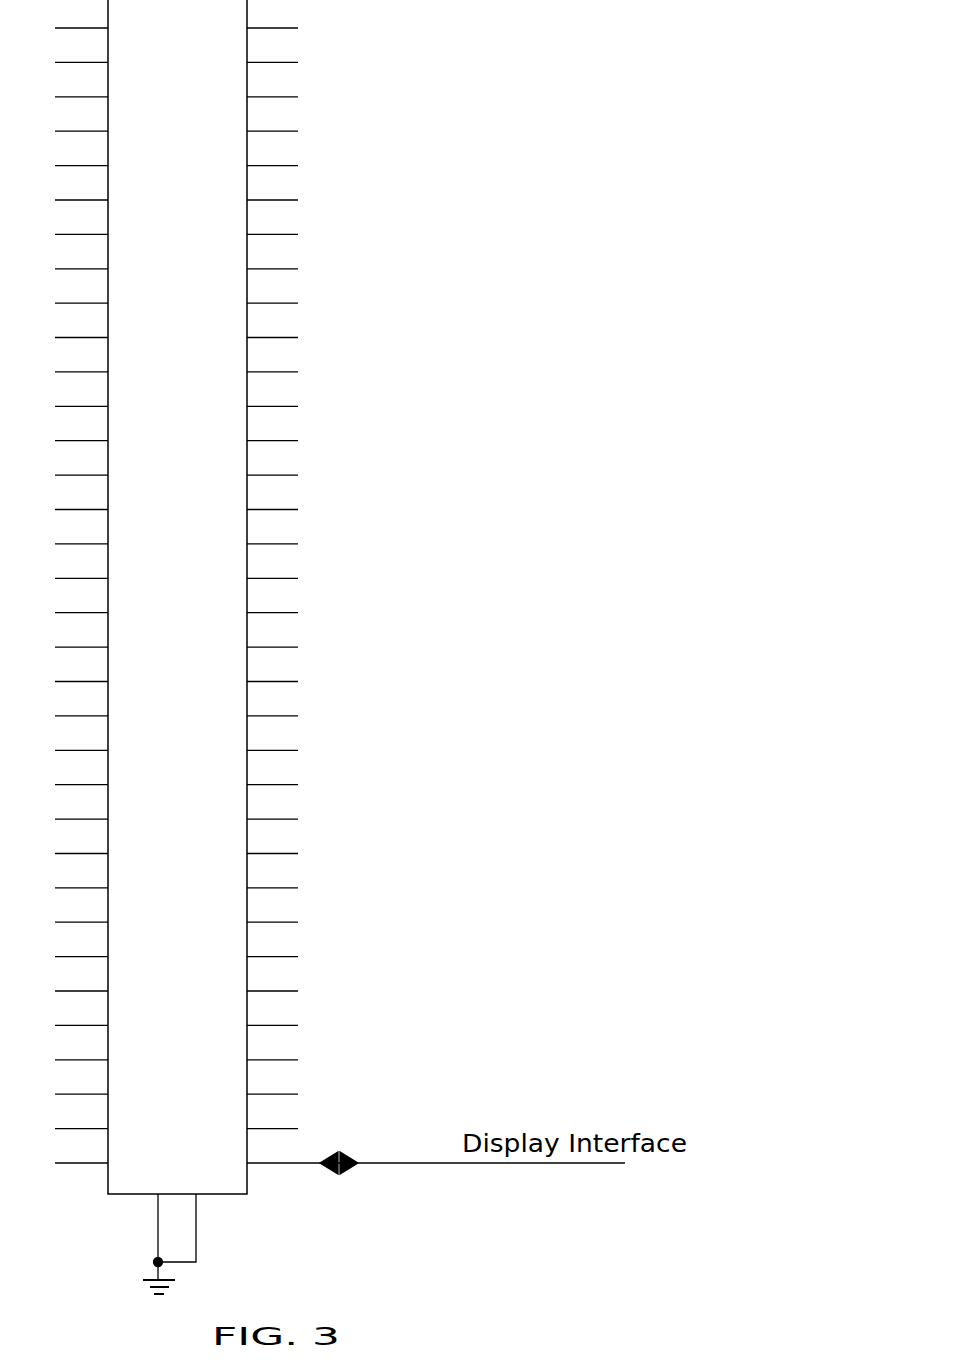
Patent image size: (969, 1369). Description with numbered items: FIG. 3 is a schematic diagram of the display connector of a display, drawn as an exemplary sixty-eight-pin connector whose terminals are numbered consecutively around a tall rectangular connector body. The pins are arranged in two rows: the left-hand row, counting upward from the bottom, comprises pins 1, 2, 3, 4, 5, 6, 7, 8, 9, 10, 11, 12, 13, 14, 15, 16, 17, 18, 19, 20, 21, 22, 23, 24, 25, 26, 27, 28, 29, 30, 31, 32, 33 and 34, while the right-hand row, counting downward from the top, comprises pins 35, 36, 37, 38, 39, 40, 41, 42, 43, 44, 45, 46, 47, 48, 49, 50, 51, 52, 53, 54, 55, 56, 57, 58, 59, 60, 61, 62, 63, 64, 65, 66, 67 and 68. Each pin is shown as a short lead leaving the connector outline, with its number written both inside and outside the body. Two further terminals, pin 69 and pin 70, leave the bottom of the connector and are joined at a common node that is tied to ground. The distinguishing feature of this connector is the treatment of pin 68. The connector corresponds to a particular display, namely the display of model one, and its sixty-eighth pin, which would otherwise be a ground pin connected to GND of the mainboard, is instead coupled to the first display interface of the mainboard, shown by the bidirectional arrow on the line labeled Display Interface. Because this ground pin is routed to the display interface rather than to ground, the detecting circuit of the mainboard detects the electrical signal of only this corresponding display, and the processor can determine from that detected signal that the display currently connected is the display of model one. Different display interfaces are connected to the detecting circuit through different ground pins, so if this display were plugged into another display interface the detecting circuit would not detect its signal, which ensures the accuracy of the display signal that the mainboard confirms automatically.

The pin 1 is at (92, 1158).
The pin 2 is at (92, 1124).
The pin 3 is at (92, 1089).
The pin 4 is at (92, 1055).
The pin 5 is at (92, 1020).
The pin 6 is at (92, 986).
The pin 7 is at (92, 952).
The pin 8 is at (92, 917).
The pin 9 is at (92, 883).
The pin 10 is at (100, 849).
The pin 11 is at (100, 814).
The pin 12 is at (100, 780).
The pin 13 is at (100, 745).
The pin 14 is at (100, 711).
The pin 15 is at (100, 677).
The pin 16 is at (100, 642).
The pin 17 is at (100, 608).
The pin 18 is at (100, 573).
The pin 19 is at (100, 539).
The pin 20 is at (100, 505).
The pin 21 is at (100, 470).
The pin 22 is at (100, 436).
The pin 23 is at (100, 401).
The pin 24 is at (100, 367).
The pin 25 is at (100, 333).
The pin 26 is at (100, 298).
The pin 27 is at (100, 264).
The pin 28 is at (100, 229).
The pin 29 is at (100, 195).
The pin 30 is at (100, 161).
The pin 31 is at (100, 126).
The pin 32 is at (100, 92).
The pin 33 is at (100, 57).
The pin 34 is at (100, 23).
The pin 35 is at (254, 23).
The pin 36 is at (254, 57).
The pin 37 is at (254, 92).
The pin 38 is at (254, 126).
The pin 39 is at (254, 161).
The pin 40 is at (254, 195).
The pin 41 is at (254, 229).
The pin 42 is at (254, 264).
The pin 43 is at (254, 298).
The pin 44 is at (254, 333).
The pin 45 is at (254, 367).
The pin 46 is at (254, 401).
The pin 47 is at (254, 436).
The pin 48 is at (254, 470).
The pin 49 is at (254, 505).
The pin 50 is at (254, 539).
The pin 51 is at (254, 573).
The pin 52 is at (254, 608).
The pin 53 is at (254, 642).
The pin 54 is at (254, 677).
The pin 55 is at (254, 711).
The pin 56 is at (254, 745).
The pin 57 is at (254, 780).
The pin 58 is at (254, 814).
The pin 59 is at (254, 849).
The pin 60 is at (254, 883).
The pin 61 is at (254, 917).
The pin 62 is at (254, 952).
The pin 63 is at (254, 986).
The pin 64 is at (254, 1020).
The pin 65 is at (254, 1055).
The pin 66 is at (254, 1089).
The pin 67 is at (254, 1124).
The sixty-eighth pin 68 is at (418, 1158).
The ground terminal 69 is at (153, 1244).
The ground terminal 70 is at (177, 1228).